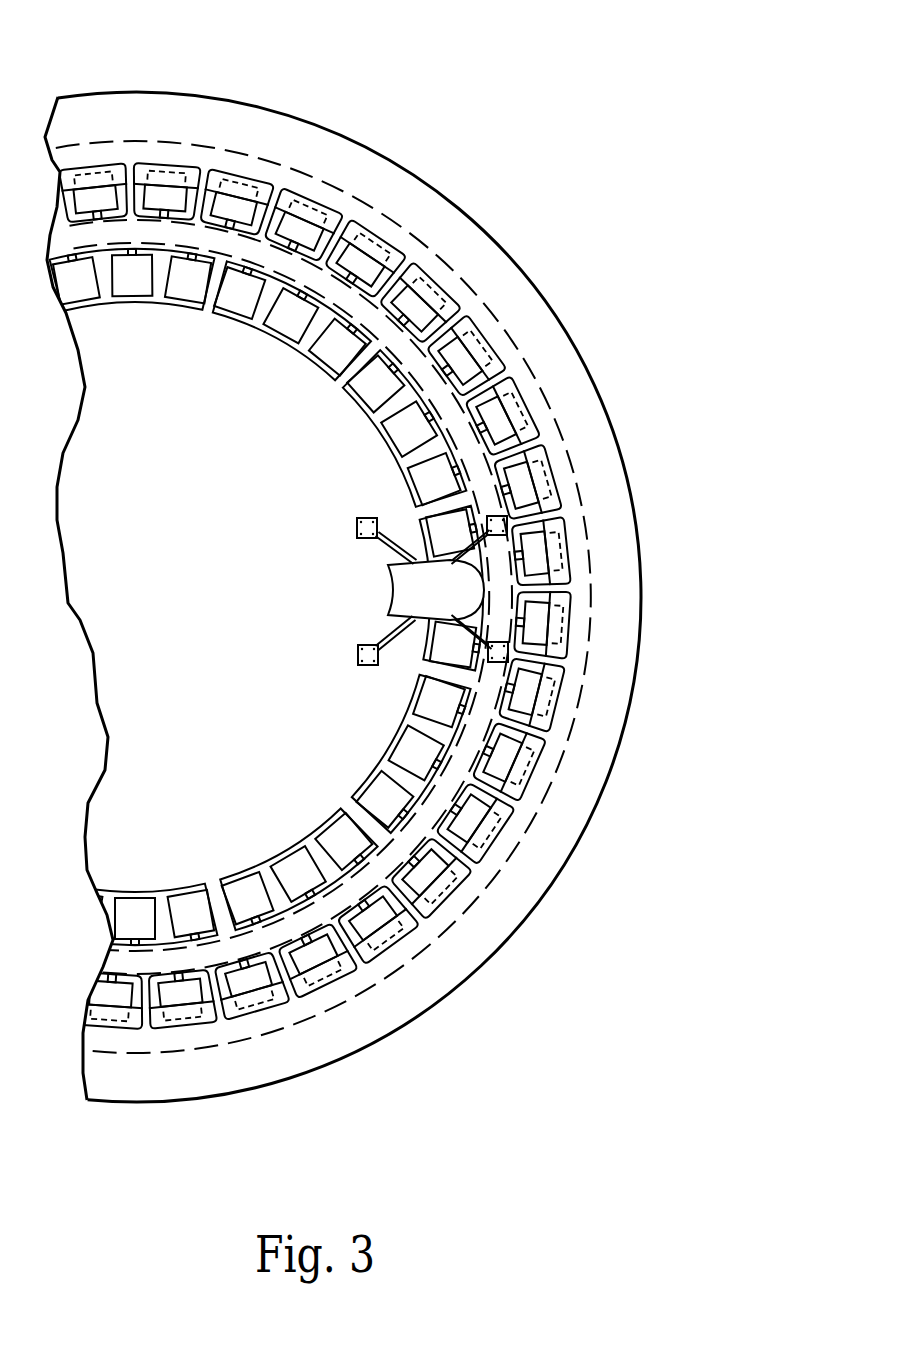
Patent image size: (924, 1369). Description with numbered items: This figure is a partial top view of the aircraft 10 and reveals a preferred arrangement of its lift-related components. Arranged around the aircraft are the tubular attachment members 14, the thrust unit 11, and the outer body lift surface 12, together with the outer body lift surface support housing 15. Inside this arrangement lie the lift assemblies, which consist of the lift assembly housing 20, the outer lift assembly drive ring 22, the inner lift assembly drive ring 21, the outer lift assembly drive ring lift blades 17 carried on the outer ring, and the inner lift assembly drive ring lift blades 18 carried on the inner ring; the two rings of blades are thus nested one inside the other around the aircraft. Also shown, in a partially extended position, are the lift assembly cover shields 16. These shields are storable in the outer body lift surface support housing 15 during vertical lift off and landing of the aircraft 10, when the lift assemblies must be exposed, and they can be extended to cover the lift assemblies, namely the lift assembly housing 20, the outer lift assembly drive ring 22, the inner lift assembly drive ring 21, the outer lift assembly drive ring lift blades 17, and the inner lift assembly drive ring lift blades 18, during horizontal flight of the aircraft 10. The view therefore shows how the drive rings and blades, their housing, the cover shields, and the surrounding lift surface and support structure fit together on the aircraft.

The aircraft 10 is at (662, 137).
The thrust unit 11 is at (412, 590).
The outer body lift surface 12 is at (443, 965).
The tubular attachment members 14 is at (572, 585).
The outer body lift surface support housing 15 is at (433, 260).
The lift assembly cover shields 16 is at (292, 988).
The outer lift assembly drive ring lift blades 17 is at (463, 363).
The inner lift assembly drive ring lift blades 18 is at (423, 473).
The lift assembly housing 20 is at (435, 380).
The inner lift assembly drive ring 21 is at (168, 248).
The outer lift assembly drive ring 22 is at (472, 290).